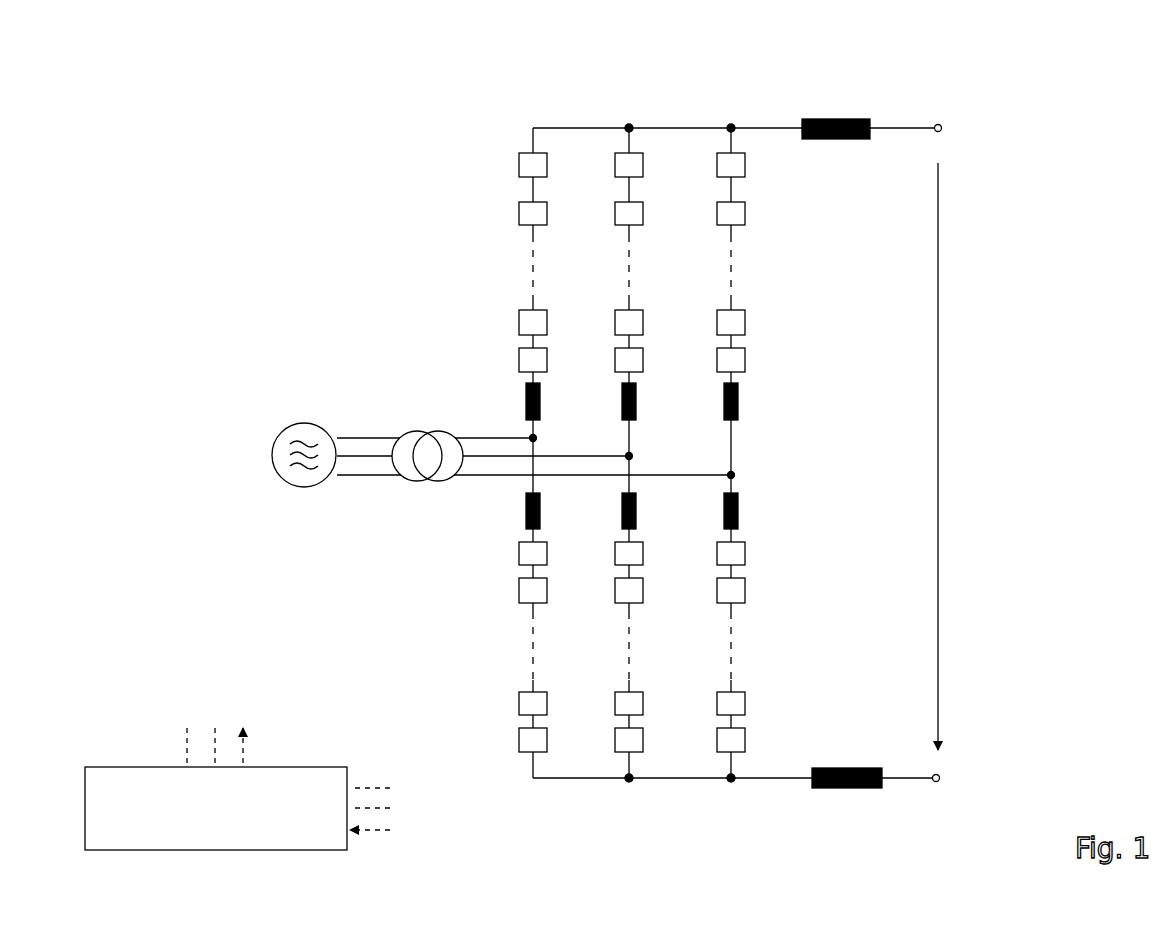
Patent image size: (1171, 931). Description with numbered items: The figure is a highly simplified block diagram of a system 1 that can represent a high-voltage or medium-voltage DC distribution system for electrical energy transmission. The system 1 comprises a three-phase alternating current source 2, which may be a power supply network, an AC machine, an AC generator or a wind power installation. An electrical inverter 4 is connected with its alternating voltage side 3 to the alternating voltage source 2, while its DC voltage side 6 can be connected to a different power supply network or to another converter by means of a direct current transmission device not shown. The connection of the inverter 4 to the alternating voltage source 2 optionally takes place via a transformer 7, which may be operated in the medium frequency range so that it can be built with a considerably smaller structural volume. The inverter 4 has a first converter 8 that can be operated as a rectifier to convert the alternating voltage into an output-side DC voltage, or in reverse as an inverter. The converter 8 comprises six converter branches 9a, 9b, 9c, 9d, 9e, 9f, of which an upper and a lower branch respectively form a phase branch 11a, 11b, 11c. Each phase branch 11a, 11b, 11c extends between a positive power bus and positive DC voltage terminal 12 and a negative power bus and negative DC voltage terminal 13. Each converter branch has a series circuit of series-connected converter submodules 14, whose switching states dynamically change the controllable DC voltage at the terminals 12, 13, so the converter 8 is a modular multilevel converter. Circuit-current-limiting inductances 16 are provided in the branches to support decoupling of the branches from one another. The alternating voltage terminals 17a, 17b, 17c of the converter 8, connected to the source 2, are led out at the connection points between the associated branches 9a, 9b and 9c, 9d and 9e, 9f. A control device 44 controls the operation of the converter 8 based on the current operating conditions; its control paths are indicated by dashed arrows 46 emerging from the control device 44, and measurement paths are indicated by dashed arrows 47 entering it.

The system 1 is at (200, 162).
The three-phase alternating current source 2 is at (270, 425).
The alternating voltage side 3 is at (465, 360).
The inverter 4 is at (430, 90).
The DC voltage side 6 is at (970, 270).
The transformer 7 is at (418, 478).
The converter 8 is at (512, 150).
The converter branch 9a is at (538, 143).
The converter branch 9b is at (528, 760).
The converter branch 9c is at (635, 143).
The converter branch 9d is at (624, 760).
The converter branch 9e is at (740, 140).
The converter branch 9f is at (726, 760).
The phase branch 11a is at (522, 467).
The phase branch 11b is at (633, 465).
The phase branch 11c is at (759, 465).
The positive DC voltage terminal 12 is at (946, 122).
The negative DC voltage terminal 13 is at (942, 776).
The converter submodule 14 is at (523, 212).
The circuit-current-limiting inductance 16 is at (523, 402).
The alternating voltage terminal 17a is at (540, 438).
The alternating voltage terminal 17b is at (636, 456).
The alternating voltage terminal 17c is at (738, 472).
The control device 44 is at (152, 830).
The control paths 46 is at (172, 738).
The measurement paths 47 is at (372, 845).